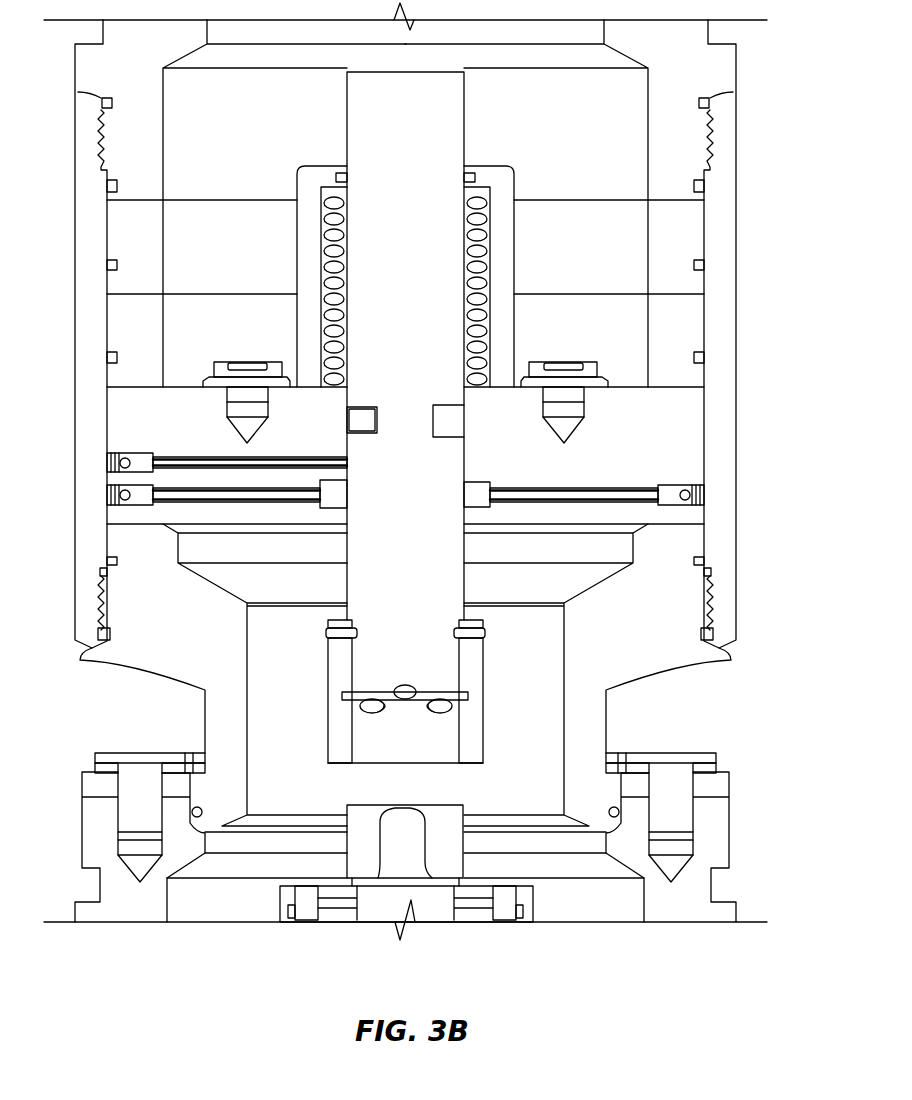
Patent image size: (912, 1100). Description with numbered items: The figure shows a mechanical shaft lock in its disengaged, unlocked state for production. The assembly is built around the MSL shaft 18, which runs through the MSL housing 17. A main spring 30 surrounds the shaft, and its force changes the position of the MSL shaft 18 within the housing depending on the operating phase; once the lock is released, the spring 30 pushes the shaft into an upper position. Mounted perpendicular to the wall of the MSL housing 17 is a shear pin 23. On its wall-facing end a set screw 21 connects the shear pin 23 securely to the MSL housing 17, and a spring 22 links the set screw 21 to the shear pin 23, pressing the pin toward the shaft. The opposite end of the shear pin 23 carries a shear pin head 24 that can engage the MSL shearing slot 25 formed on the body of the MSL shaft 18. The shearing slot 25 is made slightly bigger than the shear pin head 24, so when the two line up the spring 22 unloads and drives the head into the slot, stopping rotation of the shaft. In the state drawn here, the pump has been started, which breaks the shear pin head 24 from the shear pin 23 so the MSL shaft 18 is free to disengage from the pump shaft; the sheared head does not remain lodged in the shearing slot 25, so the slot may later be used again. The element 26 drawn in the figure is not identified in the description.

The MSL housing 17 is at (728, 424).
The MSL shaft 18 is at (448, 146).
The main spring 30 is at (475, 202).
The shear pin head 24 is at (347, 422).
The MSL shearing slot 25 is at (450, 420).
The upper push rod 26 is at (343, 458).
The shear pin 23 is at (553, 487).
The spring 22 is at (612, 487).
The set screw 21 is at (683, 485).